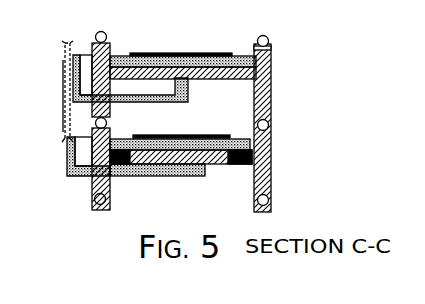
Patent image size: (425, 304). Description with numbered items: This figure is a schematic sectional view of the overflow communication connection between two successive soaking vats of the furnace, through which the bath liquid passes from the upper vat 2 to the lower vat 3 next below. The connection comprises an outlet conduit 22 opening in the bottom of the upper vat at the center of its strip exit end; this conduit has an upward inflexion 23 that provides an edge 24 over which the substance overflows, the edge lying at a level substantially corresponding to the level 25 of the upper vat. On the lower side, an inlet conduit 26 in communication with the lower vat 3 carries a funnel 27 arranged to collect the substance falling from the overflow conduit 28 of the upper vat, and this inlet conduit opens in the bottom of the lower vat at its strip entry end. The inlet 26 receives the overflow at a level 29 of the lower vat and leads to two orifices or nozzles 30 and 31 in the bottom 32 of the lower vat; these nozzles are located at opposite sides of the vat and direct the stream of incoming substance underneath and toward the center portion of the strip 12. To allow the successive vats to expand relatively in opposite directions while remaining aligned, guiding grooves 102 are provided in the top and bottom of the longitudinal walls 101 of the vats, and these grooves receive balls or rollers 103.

The upper vat 2 is at (175, 63).
The lower vat 3 is at (252, 138).
The strip 12 is at (158, 53).
The outlet conduit 22 is at (190, 70).
The upward inflexion 23 is at (65, 72).
The edge 24 is at (66, 48).
The level 25 is at (115, 53).
The inlet conduit 26 is at (66, 163).
The funnel 27 is at (66, 136).
The overflow conduit 28 is at (72, 97).
The level 29 is at (117, 140).
The nozzle 30 is at (113, 176).
The nozzle 31 is at (238, 166).
The bottom 32 is at (212, 168).
The longitudinal wall 101 is at (268, 98).
The guiding groove 102 is at (270, 48).
The ball or roller 103 is at (269, 40).